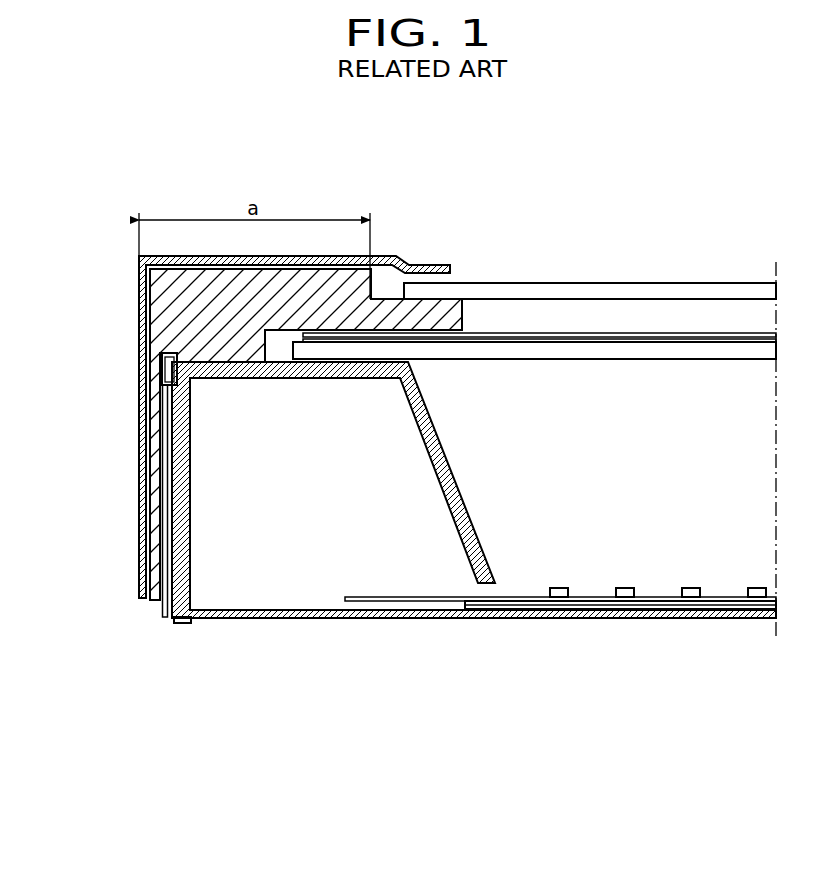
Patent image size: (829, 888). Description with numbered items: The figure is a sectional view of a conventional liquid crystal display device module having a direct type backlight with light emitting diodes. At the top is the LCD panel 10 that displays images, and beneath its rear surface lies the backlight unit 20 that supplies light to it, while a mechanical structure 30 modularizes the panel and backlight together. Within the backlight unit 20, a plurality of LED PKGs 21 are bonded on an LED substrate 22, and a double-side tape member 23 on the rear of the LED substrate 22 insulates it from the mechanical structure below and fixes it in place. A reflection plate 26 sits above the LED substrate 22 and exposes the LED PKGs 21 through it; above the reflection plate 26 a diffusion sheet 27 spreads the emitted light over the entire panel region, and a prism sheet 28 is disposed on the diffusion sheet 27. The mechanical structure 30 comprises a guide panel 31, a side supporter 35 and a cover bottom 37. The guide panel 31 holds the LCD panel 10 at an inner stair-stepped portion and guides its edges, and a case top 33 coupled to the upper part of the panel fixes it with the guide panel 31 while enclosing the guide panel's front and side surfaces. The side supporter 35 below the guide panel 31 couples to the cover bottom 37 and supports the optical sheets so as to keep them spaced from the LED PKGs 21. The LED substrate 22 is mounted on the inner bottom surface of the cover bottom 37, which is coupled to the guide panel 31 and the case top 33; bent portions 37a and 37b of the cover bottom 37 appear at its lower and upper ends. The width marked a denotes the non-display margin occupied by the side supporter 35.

The LCD panel 10 is at (632, 290).
The backlight unit 20 is at (577, 222).
The LED PKG 21 is at (557, 598).
The LED substrate 22 is at (597, 604).
The double-side tape member 23 is at (650, 608).
The reflection plate 26 is at (512, 601).
The diffusion sheet 27 is at (500, 352).
The prism sheet 28 is at (554, 336).
The mechanical structure 30 is at (53, 280).
The guide panel 31 is at (158, 330).
The case top 33 is at (143, 296).
The side supporter 35 is at (162, 422).
The cover bottom 37 is at (176, 462).
The bottom chassis lower bent portion 37a is at (181, 627).
The bottom chassis upper bent portion 37b is at (160, 368).